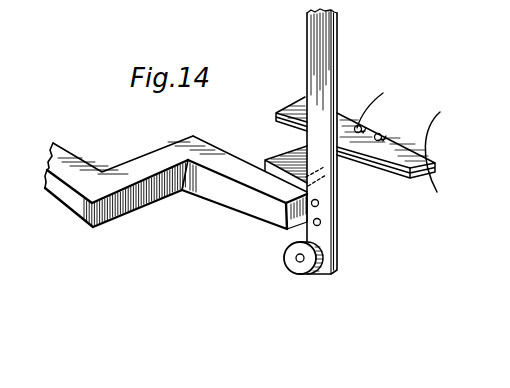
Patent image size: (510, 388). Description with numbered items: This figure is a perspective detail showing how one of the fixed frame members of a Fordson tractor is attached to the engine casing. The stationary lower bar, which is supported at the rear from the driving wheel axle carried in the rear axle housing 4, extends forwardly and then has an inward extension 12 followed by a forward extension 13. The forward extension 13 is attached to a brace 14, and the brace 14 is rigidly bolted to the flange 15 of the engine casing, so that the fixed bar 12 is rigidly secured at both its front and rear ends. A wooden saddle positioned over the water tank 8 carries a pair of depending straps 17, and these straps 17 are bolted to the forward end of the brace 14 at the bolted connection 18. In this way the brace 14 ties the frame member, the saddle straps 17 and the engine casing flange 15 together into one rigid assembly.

The rear axle housing 4 is at (423, 130).
The water tank 8 is at (285, 257).
The inward extension 12 is at (148, 165).
The forward extension 13 is at (234, 187).
The brace 14 is at (288, 155).
The flange of the engine casing 15 is at (402, 160).
The depending straps 17 is at (328, 57).
The bolted connection 18 is at (321, 213).